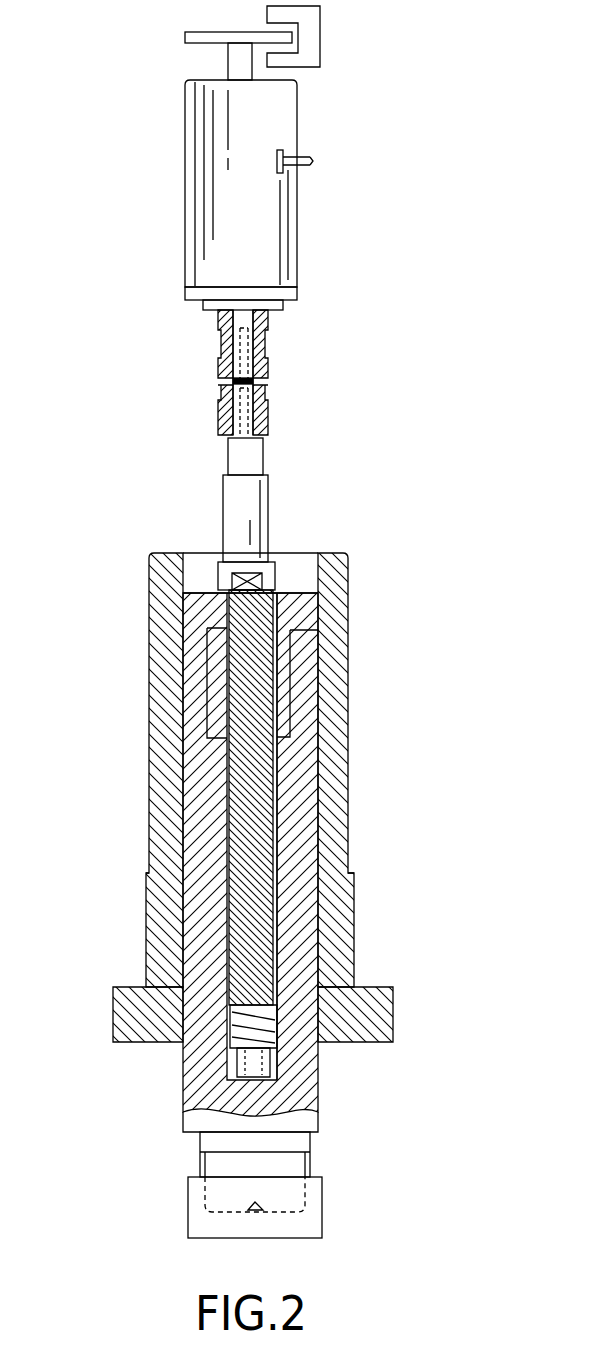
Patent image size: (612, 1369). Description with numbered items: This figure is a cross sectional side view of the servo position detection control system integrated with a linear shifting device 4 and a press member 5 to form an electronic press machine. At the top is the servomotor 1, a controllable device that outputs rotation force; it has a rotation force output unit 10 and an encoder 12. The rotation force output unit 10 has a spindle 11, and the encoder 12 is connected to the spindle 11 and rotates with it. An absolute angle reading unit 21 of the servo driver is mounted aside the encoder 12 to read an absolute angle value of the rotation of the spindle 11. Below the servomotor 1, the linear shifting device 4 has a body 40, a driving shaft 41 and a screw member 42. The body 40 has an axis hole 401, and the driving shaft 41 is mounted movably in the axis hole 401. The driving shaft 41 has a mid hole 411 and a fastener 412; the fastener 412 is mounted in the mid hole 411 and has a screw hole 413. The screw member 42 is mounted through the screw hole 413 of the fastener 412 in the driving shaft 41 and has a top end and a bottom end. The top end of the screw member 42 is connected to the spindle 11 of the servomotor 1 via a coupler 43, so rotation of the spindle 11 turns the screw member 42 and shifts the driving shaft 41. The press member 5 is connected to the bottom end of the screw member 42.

The servomotor 1 is at (240, 176).
The rotation force output unit 10 is at (268, 240).
The spindle 11 is at (248, 350).
The encoder 12 is at (195, 36).
The absolute angle reading unit 21 is at (313, 42).
The linear shifting device 4 is at (359, 567).
The body 40 is at (345, 797).
The axis hole 401 is at (308, 848).
The driving shaft 41 is at (208, 990).
The mid hole 411 is at (231, 787).
The fastener 412 is at (283, 693).
The screw hole 413 is at (272, 666).
The screw member 42 is at (240, 880).
The coupler 43 is at (285, 469).
The press member 5 is at (334, 1188).